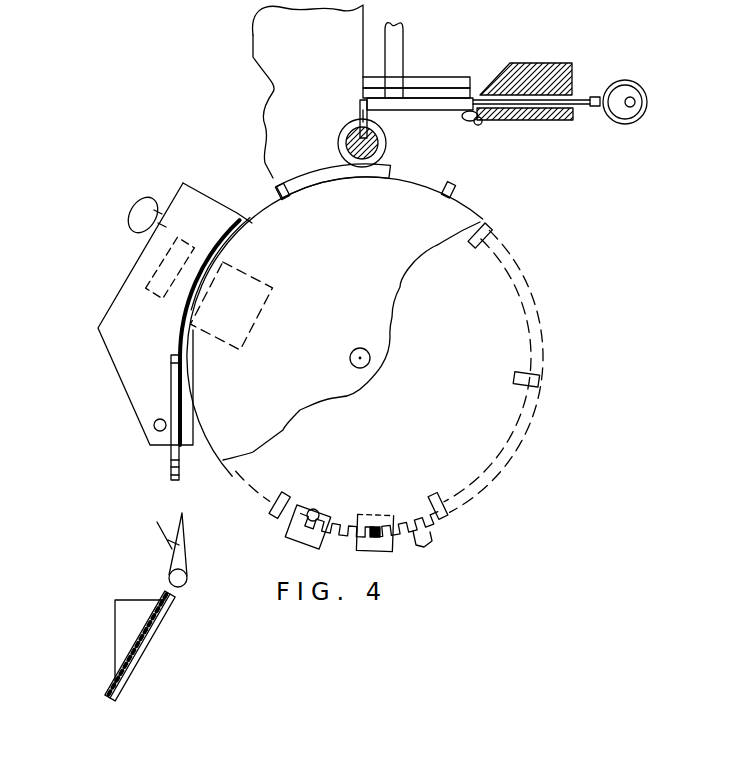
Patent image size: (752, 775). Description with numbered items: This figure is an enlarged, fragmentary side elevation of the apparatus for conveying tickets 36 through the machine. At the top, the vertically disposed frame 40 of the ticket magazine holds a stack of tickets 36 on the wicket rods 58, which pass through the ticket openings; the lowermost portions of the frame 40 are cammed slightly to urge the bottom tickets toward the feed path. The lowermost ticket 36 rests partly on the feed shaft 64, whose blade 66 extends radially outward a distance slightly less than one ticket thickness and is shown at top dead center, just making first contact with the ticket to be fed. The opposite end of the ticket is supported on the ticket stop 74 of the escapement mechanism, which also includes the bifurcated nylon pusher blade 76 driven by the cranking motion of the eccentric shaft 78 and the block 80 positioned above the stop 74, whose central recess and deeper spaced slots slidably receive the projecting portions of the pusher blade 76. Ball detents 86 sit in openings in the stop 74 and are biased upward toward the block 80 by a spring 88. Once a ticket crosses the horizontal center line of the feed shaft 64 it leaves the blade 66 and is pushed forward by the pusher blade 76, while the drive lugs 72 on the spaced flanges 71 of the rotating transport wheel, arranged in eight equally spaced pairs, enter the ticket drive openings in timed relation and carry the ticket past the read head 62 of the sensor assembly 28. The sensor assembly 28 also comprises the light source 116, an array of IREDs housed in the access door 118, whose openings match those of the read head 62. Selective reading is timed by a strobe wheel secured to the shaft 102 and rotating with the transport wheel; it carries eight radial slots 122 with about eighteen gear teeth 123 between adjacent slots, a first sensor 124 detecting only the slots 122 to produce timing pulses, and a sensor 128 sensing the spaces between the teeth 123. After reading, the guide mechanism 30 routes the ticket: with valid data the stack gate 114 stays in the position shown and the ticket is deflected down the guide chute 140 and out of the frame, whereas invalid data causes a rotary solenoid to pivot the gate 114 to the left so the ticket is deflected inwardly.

The ticket sensor assembly 28 is at (100, 313).
The guide mechanism 30 is at (164, 646).
The ticket 36 is at (433, 106).
The frame 40 is at (326, 61).
The wicket rods 58 is at (397, 43).
The read head 62 is at (240, 325).
The feed shaft 64 is at (345, 150).
The blade 66 is at (360, 109).
The flanges 71 is at (364, 234).
The drive lugs 72 is at (276, 185).
The ticket stop 74 is at (549, 119).
The pusher blade 76 is at (583, 107).
The eccentric shaft 78 is at (647, 101).
The block 80 is at (563, 74).
The ball detents 86 is at (468, 121).
The spring 88 is at (481, 125).
The shaft 102 is at (392, 368).
The stack gate 114 is at (175, 551).
The light source 116 is at (172, 268).
The access door 118 is at (212, 227).
The slots 122 is at (492, 233).
The gear teeth 123 is at (440, 540).
The first sensor 124 is at (294, 537).
The sensor 128 is at (372, 515).
The guide chute 140 is at (135, 669).